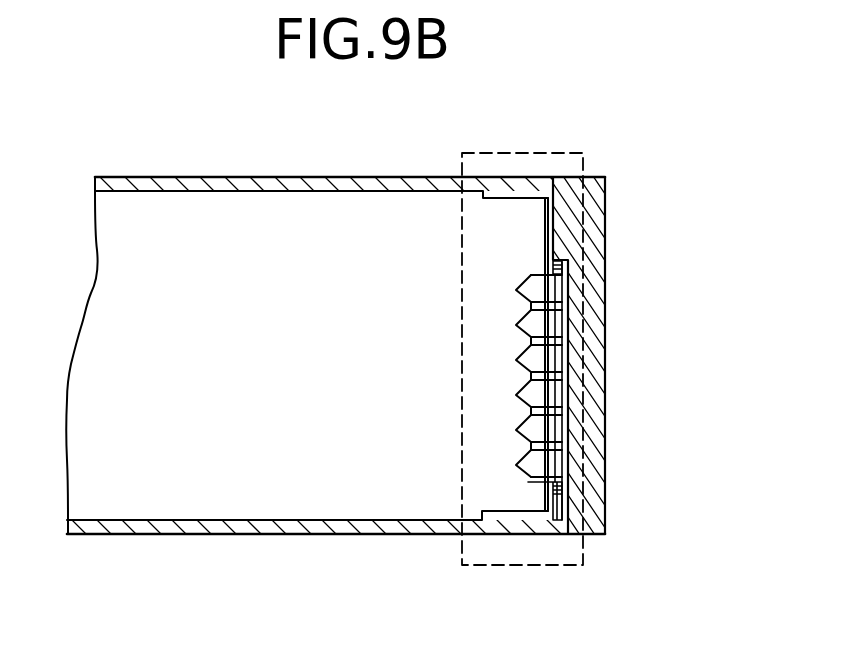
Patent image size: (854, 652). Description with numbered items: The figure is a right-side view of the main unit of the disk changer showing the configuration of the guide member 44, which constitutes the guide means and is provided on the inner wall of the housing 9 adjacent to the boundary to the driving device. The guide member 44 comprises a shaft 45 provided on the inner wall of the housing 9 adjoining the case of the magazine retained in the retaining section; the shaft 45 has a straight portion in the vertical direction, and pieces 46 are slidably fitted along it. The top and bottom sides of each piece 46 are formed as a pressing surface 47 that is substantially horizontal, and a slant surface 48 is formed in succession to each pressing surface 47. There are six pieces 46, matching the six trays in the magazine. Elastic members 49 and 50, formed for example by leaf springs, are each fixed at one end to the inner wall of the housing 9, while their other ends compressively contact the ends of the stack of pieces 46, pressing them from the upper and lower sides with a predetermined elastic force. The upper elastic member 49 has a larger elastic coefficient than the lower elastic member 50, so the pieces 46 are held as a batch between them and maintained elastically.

The housing 9 is at (302, 177).
The guide member 44 is at (516, 152).
The shaft 45 is at (552, 208).
The pieces 46 is at (560, 282).
The pressing surface 47 is at (524, 311).
The slant surface 48 is at (522, 295).
The upper elastic member 49 is at (568, 260).
The lower elastic member 50 is at (556, 484).